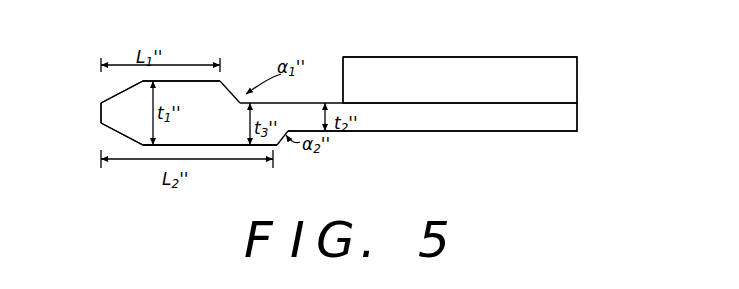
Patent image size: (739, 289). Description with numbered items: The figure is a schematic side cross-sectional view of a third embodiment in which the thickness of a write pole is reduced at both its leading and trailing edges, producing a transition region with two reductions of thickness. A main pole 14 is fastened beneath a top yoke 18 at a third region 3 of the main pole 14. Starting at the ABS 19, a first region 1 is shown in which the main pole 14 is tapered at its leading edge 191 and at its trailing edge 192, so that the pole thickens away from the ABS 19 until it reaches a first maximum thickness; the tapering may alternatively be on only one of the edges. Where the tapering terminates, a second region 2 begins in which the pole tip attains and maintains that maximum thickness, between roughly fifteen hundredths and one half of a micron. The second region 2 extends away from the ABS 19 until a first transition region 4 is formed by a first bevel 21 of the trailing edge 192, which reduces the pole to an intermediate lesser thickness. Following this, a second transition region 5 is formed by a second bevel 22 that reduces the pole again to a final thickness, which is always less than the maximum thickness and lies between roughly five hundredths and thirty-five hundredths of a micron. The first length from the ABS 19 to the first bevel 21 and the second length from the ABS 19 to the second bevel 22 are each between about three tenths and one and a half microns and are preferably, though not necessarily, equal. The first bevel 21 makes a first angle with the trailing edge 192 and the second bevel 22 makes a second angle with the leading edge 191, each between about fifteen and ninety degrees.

The first region 1 is at (110, 55).
The second region 2 is at (188, 53).
The third region 3 is at (455, 143).
The first transition region 4 is at (226, 171).
The second transition region 5 is at (297, 102).
The main pole 14 is at (558, 121).
The top yoke 18 is at (558, 80).
The ABS 19 is at (98, 116).
The first bevel 21 is at (227, 84).
The second bevel 22 is at (283, 142).
The leading edge 191 is at (117, 134).
The trailing edge 192 is at (118, 90).